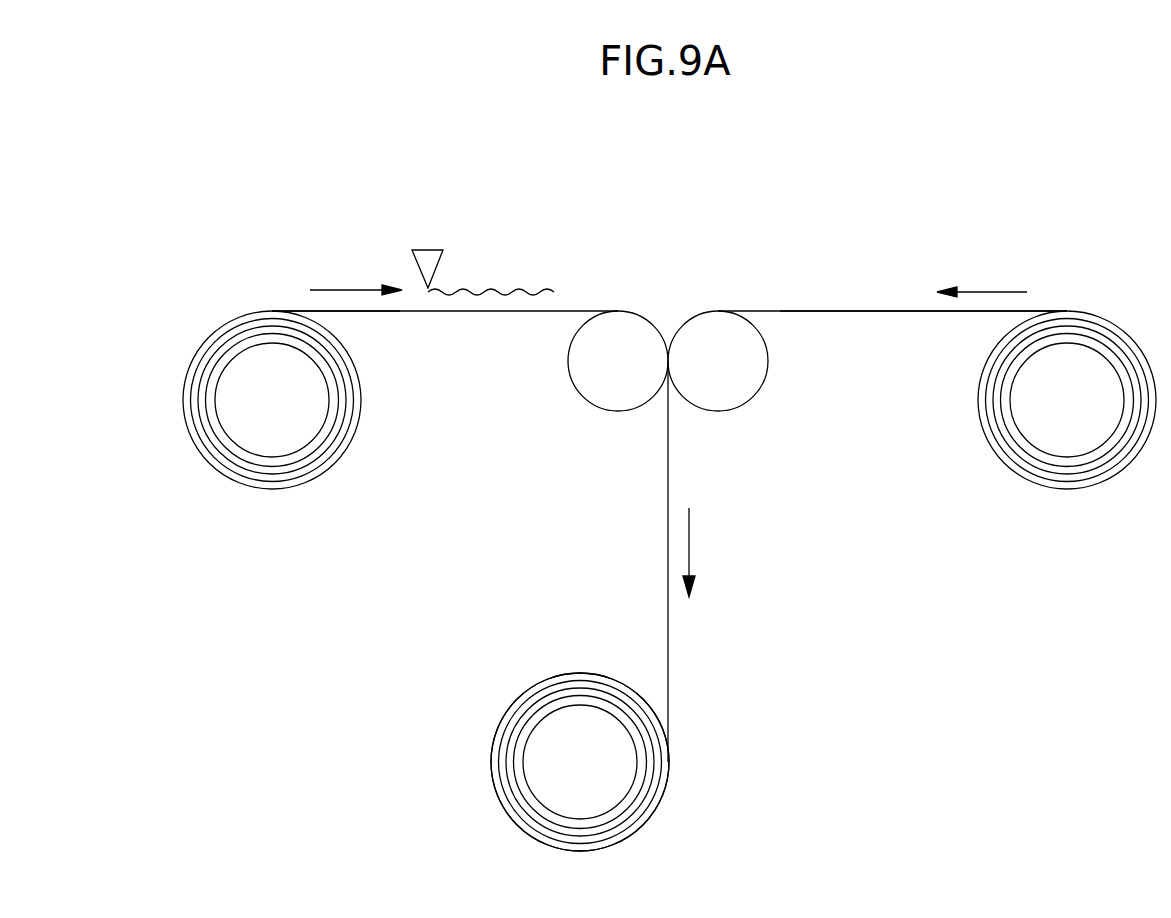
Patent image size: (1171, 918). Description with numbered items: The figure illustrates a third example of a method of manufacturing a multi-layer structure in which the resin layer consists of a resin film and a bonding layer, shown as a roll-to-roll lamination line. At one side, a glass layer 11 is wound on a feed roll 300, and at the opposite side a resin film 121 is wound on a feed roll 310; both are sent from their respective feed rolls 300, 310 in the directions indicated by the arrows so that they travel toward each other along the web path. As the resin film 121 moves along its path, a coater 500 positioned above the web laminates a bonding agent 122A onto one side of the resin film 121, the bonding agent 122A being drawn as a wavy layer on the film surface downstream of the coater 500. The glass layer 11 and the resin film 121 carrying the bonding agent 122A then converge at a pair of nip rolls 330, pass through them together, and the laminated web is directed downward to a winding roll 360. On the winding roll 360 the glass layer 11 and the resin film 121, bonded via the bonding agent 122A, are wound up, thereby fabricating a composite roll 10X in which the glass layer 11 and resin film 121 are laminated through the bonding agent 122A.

The resin film 121 is at (270, 309).
The coater 500 is at (427, 248).
The bonding agent 122A is at (518, 289).
The nip rolls 330 is at (718, 338).
The glass layer 11 is at (866, 309).
The feed roll 310 is at (270, 420).
The feed roll 300 is at (1067, 420).
The winding roll 360 is at (555, 762).
The composite roll 10X is at (520, 675).